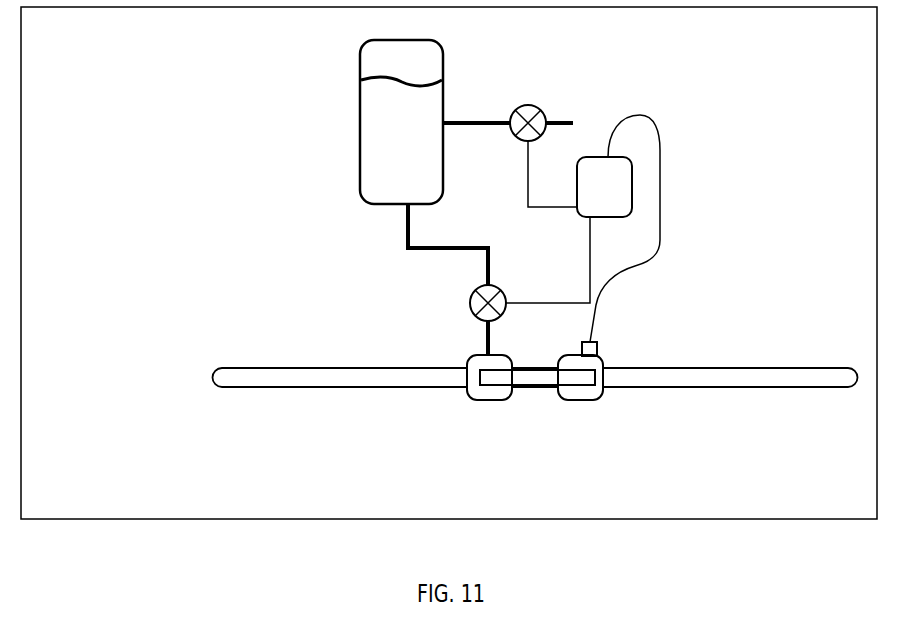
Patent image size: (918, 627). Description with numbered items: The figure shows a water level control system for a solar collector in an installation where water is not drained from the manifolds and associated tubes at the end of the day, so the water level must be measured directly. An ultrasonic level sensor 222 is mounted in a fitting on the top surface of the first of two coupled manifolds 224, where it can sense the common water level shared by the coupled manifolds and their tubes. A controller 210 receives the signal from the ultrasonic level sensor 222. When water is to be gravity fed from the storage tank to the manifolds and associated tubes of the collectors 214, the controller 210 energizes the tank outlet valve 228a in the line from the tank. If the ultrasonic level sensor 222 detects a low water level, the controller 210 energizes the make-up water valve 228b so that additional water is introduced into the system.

The make-up water valve 228b is at (576, 95).
The tank outlet valve 228a is at (455, 314).
The controller 210 is at (630, 197).
The collectors 214 is at (692, 129).
The ultrasonic level sensor 222 is at (637, 348).
The coupled manifolds 224 is at (735, 364).